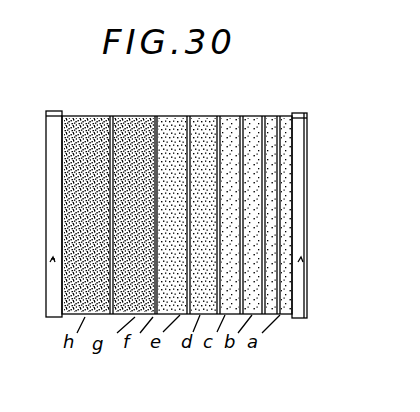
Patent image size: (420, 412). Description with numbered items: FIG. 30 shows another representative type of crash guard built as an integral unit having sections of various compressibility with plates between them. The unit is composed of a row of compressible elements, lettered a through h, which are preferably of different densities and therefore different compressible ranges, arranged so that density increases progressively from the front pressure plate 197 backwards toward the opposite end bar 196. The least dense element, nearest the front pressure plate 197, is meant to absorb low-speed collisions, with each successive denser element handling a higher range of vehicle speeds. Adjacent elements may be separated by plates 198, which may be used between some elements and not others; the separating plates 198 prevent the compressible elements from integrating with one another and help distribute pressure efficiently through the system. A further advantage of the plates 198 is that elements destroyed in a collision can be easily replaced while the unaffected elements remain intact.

The left end bar 196 is at (60, 110).
The front pressure plate 197 is at (300, 113).
The separating plates 198 is at (241, 116).